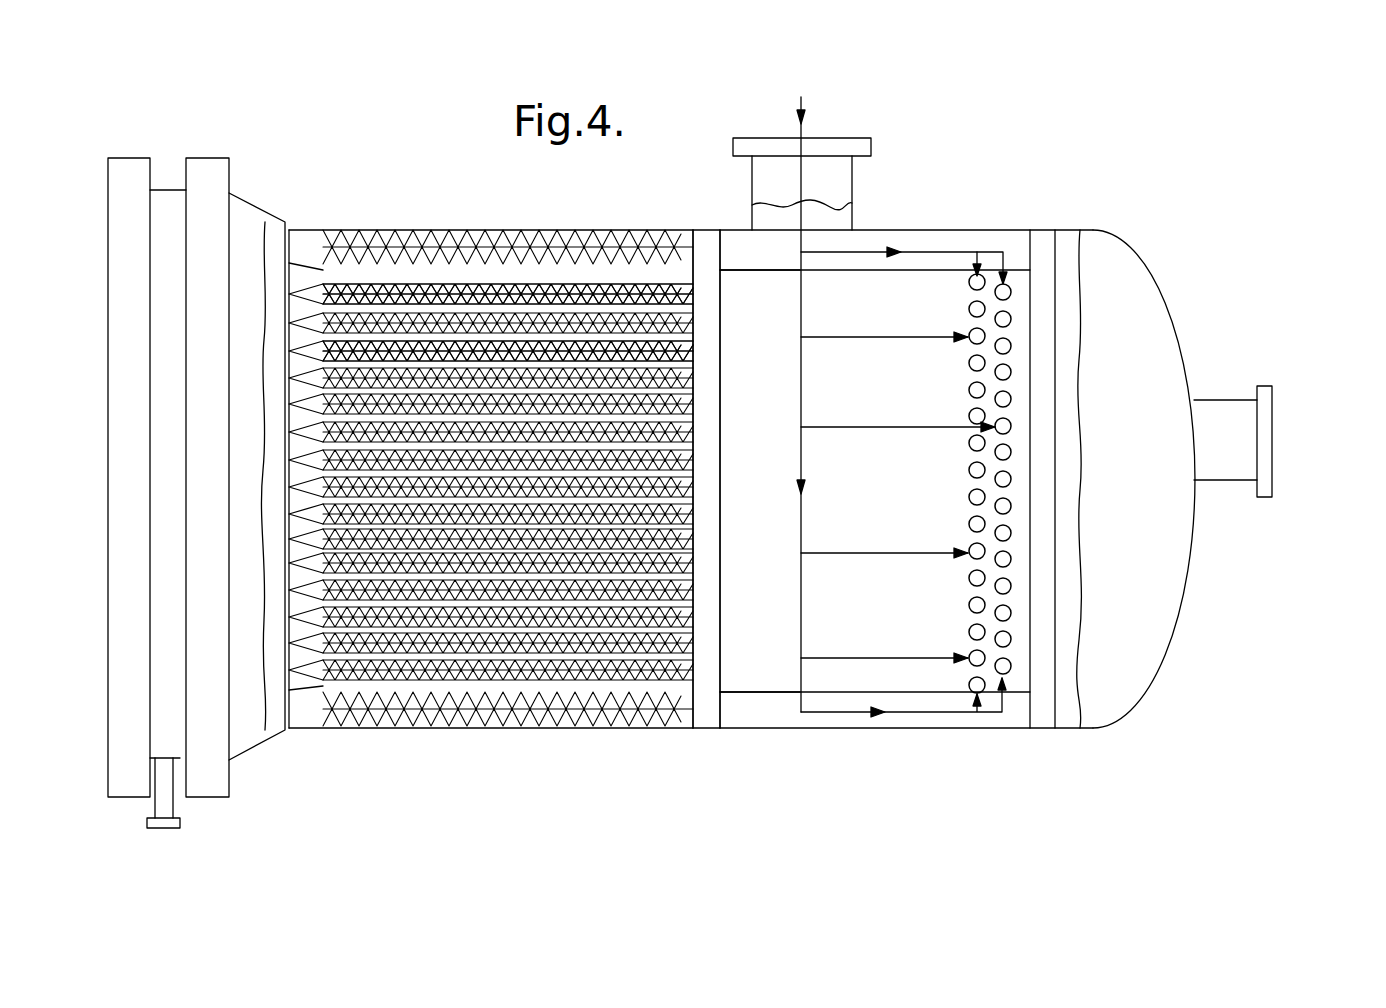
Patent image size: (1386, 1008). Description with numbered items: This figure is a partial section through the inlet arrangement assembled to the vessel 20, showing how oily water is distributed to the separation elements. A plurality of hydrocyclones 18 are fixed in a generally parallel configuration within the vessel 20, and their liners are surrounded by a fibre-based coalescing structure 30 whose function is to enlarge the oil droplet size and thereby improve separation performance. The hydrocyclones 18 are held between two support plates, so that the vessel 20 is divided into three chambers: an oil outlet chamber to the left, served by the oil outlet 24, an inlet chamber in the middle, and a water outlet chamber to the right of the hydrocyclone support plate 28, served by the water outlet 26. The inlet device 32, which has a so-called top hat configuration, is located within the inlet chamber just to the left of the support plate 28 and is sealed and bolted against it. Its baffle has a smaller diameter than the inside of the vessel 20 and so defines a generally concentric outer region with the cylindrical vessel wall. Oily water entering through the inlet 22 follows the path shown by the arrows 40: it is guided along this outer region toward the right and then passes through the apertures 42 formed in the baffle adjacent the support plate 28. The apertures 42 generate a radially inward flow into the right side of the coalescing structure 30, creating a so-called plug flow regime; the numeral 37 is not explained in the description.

The hydrocyclones 18 is at (350, 748).
The vessel 20 is at (1200, 260).
The inlet 22 is at (852, 188).
The oil outlet 24 is at (170, 830).
The water outlet 26 is at (170, 219).
The hydrocyclone support plate 28 is at (1040, 288).
The fibre-based coalescing structure 30 is at (362, 745).
The inlet device 32 is at (772, 668).
The tube sheet 37 is at (703, 705).
The arrows 40 is at (803, 100).
The apertures 42 is at (970, 608).